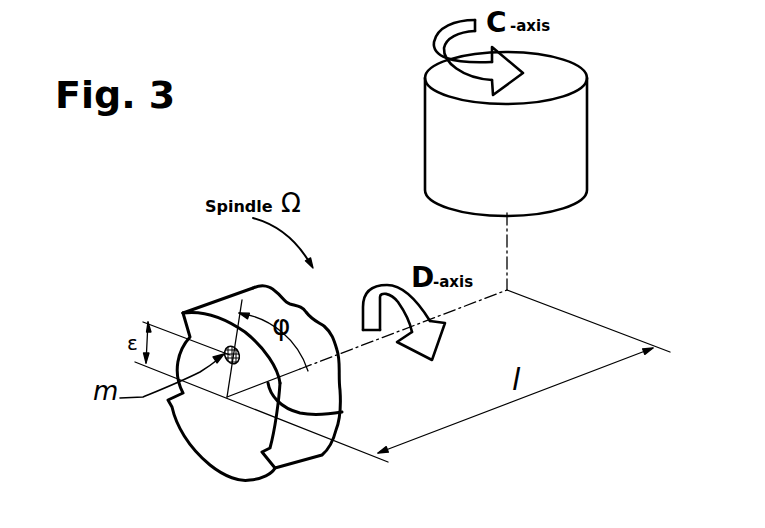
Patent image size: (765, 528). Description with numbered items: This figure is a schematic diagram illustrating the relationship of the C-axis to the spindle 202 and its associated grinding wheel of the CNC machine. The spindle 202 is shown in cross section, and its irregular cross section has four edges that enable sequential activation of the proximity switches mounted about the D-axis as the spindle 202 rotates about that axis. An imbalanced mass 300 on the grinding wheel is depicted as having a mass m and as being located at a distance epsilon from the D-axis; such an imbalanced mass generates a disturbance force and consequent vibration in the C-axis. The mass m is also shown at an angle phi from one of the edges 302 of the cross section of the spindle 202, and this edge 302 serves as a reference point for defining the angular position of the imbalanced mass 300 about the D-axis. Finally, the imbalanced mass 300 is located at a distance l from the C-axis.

The spindle 202 is at (190, 428).
The imbalanced mass 300 is at (232, 350).
The edge of the cross section of the spindle 302 is at (330, 413).